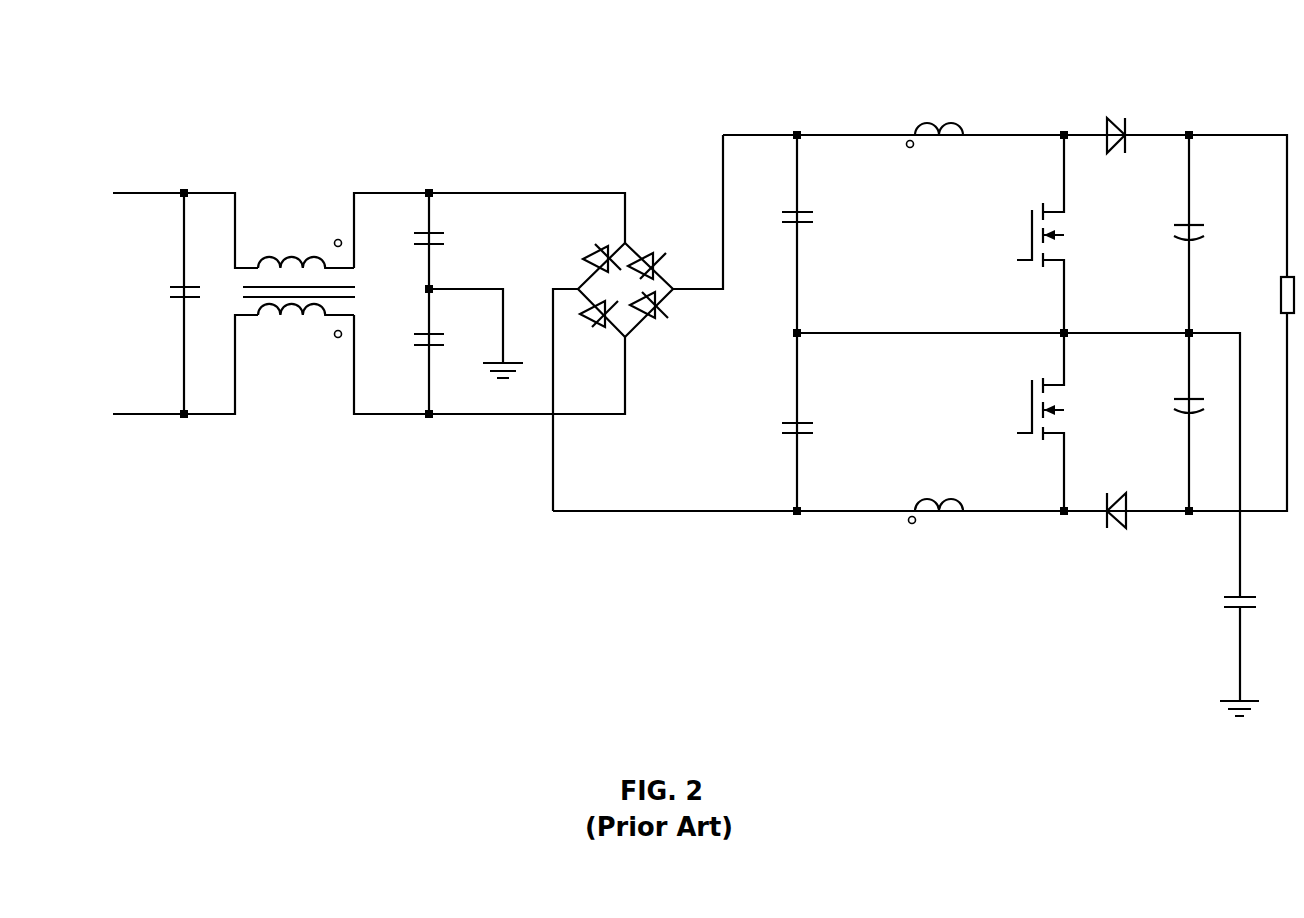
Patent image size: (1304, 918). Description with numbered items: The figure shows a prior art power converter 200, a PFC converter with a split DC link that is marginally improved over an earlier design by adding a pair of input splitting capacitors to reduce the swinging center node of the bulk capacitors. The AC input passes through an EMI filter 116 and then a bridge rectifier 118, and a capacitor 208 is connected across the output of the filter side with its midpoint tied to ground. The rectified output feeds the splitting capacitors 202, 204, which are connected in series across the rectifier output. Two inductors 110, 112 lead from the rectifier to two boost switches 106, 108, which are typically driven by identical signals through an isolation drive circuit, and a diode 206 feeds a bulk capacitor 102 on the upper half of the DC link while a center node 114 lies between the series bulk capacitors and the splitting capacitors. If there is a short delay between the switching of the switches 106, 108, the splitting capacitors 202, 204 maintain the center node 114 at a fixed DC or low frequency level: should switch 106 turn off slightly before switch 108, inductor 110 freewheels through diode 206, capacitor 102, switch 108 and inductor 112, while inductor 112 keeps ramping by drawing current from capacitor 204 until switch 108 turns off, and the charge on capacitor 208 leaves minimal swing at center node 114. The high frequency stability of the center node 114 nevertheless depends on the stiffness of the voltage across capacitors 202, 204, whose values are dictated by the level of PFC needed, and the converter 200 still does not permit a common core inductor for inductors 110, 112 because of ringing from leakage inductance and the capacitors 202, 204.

The power converter 200 is at (152, 65).
The EMI filter 116 is at (302, 430).
The bridge rectifier 118 is at (521, 432).
The capacitor 208 is at (434, 233).
The splitting capacitor 202 is at (798, 208).
The splitting capacitor 204 is at (798, 418).
The inductor 110 is at (921, 122).
The inductor 112 is at (921, 498).
The boost switch 106 is at (1008, 222).
The boost switch 108 is at (1008, 408).
The diode 206 is at (1123, 114).
The capacitor 102 is at (1192, 222).
The center node 114 is at (1192, 330).